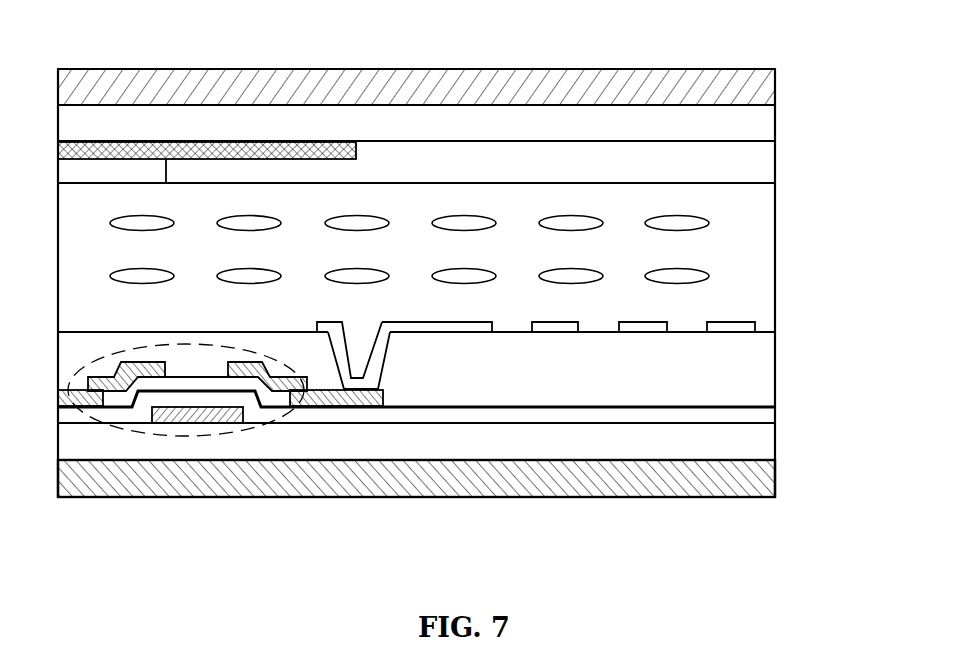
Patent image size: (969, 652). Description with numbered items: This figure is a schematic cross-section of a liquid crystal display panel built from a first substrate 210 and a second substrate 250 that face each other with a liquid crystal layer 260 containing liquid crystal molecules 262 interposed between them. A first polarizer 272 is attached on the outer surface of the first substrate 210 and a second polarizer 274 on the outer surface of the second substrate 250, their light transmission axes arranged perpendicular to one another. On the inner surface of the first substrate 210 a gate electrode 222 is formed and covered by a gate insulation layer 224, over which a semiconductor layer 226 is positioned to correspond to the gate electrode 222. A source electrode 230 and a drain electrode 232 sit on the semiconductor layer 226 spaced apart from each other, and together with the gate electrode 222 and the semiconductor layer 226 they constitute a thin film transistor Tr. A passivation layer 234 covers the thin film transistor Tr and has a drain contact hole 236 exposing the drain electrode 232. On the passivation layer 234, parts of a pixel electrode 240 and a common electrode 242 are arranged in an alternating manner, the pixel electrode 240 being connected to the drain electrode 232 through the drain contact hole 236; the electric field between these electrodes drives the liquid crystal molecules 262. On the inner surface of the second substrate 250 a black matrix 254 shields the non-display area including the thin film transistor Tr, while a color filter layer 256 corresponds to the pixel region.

The second polarizer 274 is at (750, 90).
The second substrate 250 is at (752, 122).
The black matrix 254 is at (213, 152).
The color filter layer 256 is at (143, 172).
The liquid crystal layer 260 is at (768, 260).
The liquid crystal molecules 262 is at (693, 275).
The drain contact hole 236 is at (359, 343).
The source electrode 230 is at (147, 362).
The drain electrode 232 is at (253, 362).
The pixel electrode 240 is at (646, 332).
The common electrode 242 is at (726, 332).
The first substrate 210 is at (752, 432).
The first polarizer 272 is at (752, 470).
The thin film transistor Tr is at (130, 430).
The gate electrode 222 is at (190, 413).
The semiconductor layer 226 is at (274, 392).
The gate insulation layer 224 is at (452, 413).
The passivation layer 234 is at (510, 388).